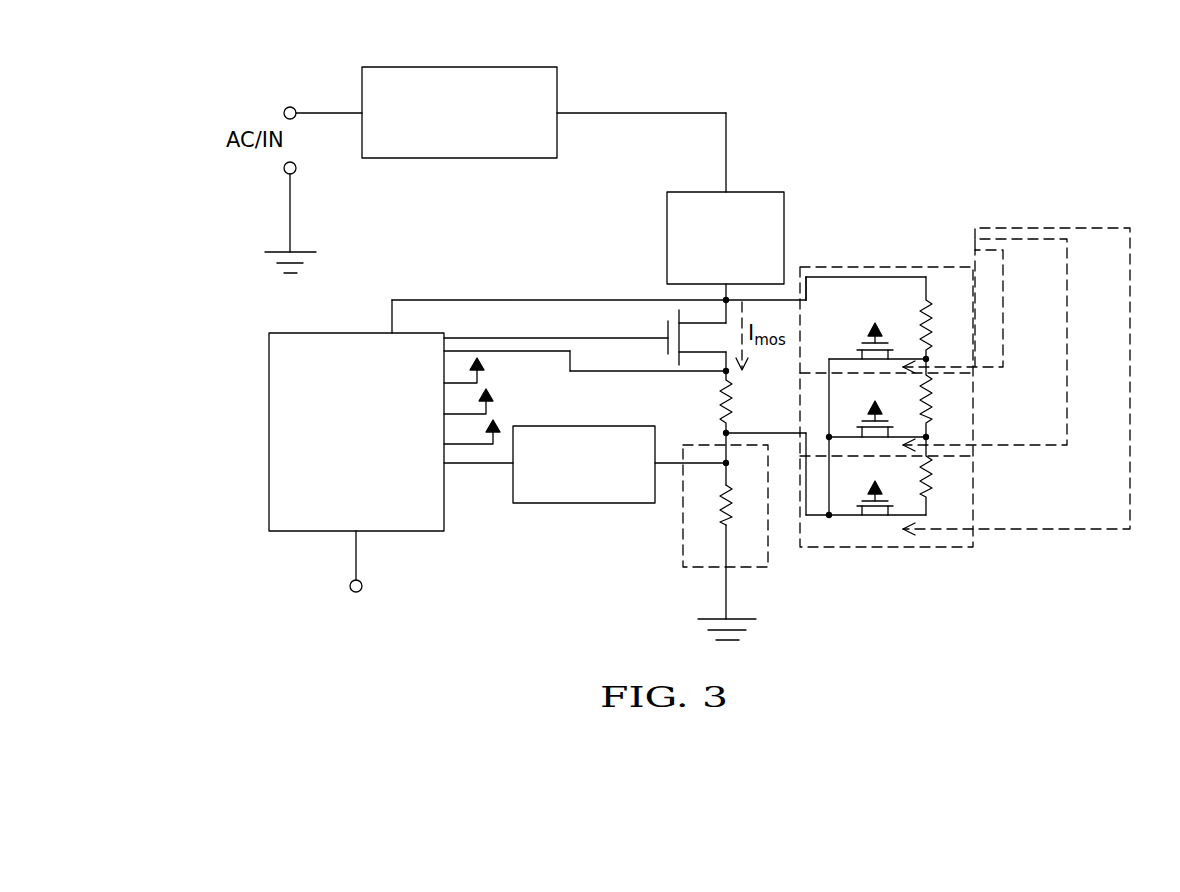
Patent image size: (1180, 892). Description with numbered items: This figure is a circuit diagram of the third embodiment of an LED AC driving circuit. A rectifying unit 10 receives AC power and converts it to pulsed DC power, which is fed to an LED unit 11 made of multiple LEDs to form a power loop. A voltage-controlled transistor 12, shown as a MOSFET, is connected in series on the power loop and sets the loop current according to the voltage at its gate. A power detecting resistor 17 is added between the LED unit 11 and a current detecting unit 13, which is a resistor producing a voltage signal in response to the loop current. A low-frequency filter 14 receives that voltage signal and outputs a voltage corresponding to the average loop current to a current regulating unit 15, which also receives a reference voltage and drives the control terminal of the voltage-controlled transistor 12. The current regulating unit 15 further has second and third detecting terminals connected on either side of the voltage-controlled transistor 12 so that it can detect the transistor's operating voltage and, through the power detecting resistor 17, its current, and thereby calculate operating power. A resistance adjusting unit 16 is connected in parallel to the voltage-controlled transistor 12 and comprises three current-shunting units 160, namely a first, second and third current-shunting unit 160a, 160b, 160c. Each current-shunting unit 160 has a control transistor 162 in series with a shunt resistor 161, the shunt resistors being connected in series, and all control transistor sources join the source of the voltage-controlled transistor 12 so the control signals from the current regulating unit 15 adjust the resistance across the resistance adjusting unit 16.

The rectifying unit 10 is at (447, 67).
The LED unit 11 is at (778, 192).
The voltage-controlled transistor 12 is at (665, 330).
The current detecting unit 13 is at (682, 530).
The low-frequency filter 14 is at (591, 503).
The current regulating unit 15 is at (269, 480).
The resistance adjusting unit 16 is at (858, 254).
The power detecting resistor 17 is at (722, 410).
The current-shunting unit 160 is at (824, 533).
The first current-shunting unit 160a is at (935, 270).
The second current-shunting unit 160b is at (955, 428).
The third current-shunting unit 160c is at (968, 536).
The shunt resistor 161 is at (928, 494).
The control transistor 162 is at (877, 516).